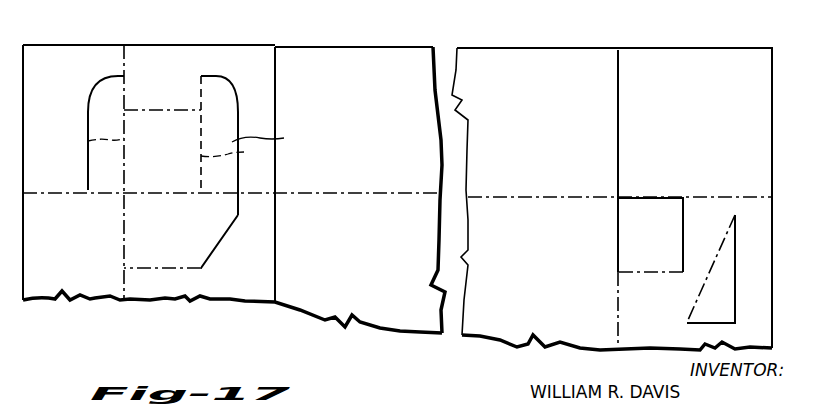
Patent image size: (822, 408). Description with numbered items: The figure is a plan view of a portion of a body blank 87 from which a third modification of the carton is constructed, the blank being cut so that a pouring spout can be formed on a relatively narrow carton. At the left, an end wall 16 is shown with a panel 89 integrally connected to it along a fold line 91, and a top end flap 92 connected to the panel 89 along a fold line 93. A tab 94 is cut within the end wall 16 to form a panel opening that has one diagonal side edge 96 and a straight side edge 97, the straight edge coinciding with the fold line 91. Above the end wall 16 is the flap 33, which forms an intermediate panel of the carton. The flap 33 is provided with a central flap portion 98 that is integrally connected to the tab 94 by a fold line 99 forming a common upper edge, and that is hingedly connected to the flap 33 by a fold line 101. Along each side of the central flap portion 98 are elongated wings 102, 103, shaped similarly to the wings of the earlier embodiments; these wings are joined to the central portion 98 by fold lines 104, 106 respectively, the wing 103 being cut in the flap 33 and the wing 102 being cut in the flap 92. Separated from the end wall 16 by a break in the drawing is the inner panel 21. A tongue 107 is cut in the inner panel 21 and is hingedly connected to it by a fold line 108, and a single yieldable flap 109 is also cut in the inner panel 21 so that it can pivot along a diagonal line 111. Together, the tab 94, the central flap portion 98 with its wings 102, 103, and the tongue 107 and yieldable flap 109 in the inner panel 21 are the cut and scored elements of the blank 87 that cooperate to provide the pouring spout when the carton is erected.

The end wall 16 is at (226, 300).
The inner panel 21 is at (612, 199).
The flap 33 is at (242, 54).
The body blank 87 is at (98, 325).
The panel 89 is at (52, 297).
The fold line 91 is at (118, 296).
The top end flap 92 is at (78, 54).
The fold line 93 is at (50, 192).
The tab 94 is at (181, 240).
The diagonal side edge 96 is at (224, 233).
The straight side edge 97 is at (124, 231).
The central flap portion 98 is at (162, 171).
The fold line 99 is at (188, 198).
The fold line 101 is at (182, 110).
The wing 102 is at (93, 124).
The wing 103 is at (274, 138).
The fold line 104 is at (88, 143).
The fold line 106 is at (238, 152).
The tongue 107 is at (650, 235).
The fold line 108 is at (660, 272).
The yieldable flap 109 is at (728, 275).
The diagonal line 111 is at (718, 250).